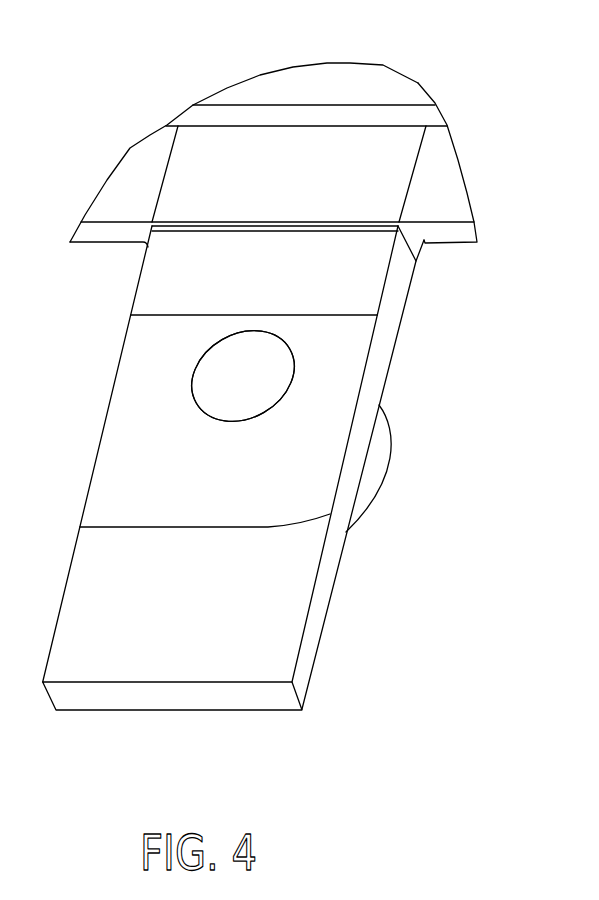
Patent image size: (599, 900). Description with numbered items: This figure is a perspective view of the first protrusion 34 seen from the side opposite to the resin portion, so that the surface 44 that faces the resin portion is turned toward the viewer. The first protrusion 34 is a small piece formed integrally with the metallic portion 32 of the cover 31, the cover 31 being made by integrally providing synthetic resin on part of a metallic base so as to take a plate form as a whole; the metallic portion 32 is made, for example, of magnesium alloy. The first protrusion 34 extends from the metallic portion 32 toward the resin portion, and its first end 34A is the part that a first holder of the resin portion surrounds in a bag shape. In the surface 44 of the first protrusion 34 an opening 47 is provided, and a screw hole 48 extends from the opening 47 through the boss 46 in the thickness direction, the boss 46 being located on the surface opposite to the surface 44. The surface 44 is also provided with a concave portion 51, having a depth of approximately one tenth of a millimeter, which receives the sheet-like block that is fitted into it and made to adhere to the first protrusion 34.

The cover 31 is at (352, 70).
The metallic portion 32 is at (457, 170).
The first protrusion 34 is at (240, 471).
The first end 34A is at (213, 672).
The surface 44 is at (305, 578).
The boss 46 is at (377, 475).
The opening 47 is at (192, 371).
The screw hole 48 is at (287, 378).
The concave portion 51 is at (105, 463).